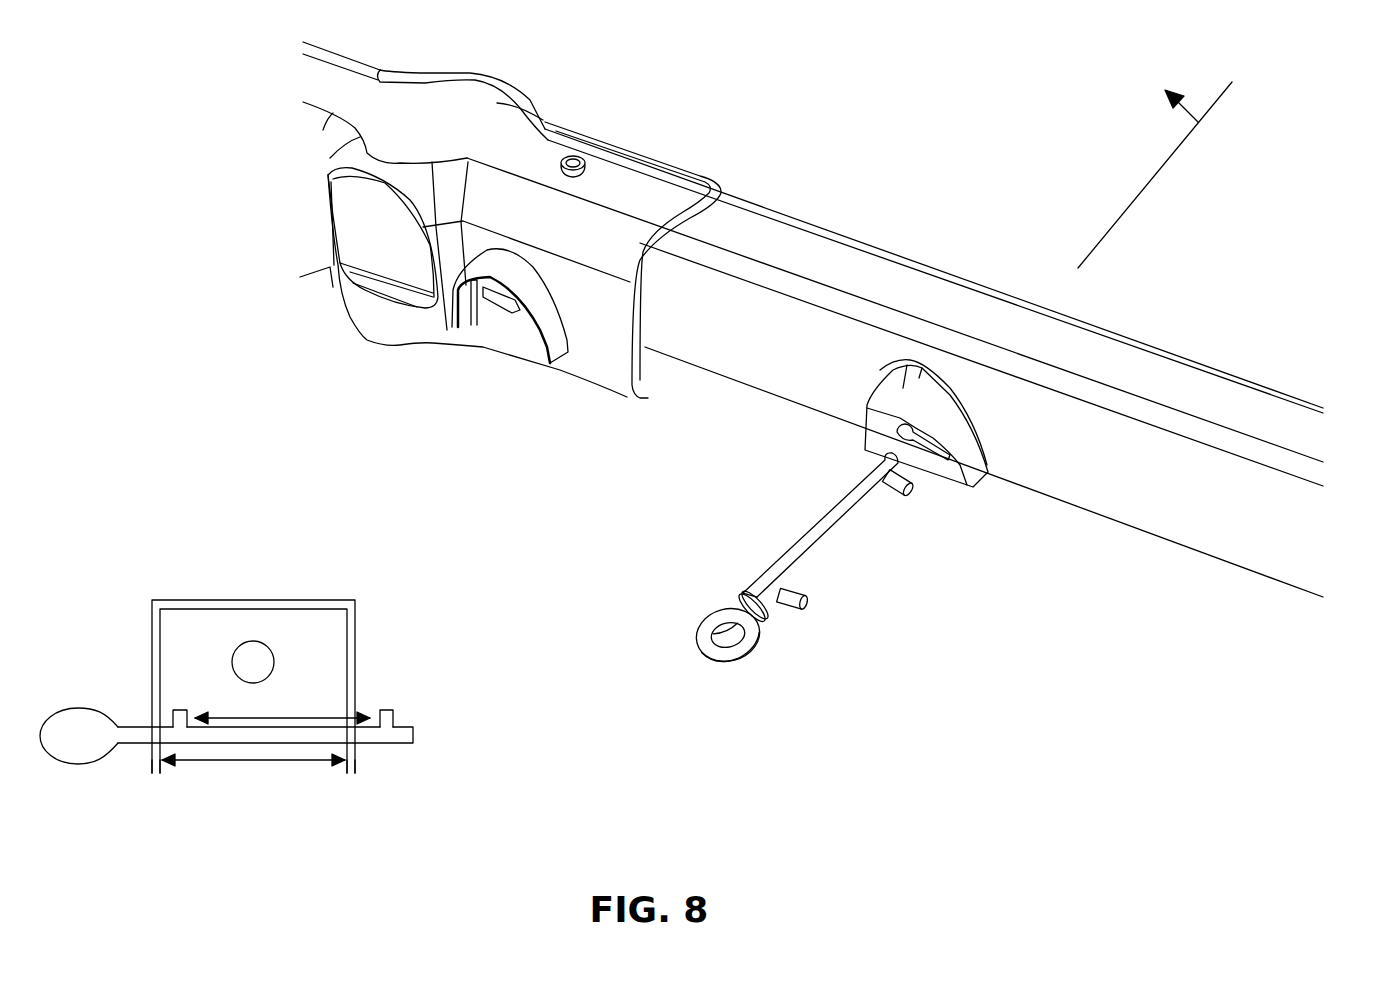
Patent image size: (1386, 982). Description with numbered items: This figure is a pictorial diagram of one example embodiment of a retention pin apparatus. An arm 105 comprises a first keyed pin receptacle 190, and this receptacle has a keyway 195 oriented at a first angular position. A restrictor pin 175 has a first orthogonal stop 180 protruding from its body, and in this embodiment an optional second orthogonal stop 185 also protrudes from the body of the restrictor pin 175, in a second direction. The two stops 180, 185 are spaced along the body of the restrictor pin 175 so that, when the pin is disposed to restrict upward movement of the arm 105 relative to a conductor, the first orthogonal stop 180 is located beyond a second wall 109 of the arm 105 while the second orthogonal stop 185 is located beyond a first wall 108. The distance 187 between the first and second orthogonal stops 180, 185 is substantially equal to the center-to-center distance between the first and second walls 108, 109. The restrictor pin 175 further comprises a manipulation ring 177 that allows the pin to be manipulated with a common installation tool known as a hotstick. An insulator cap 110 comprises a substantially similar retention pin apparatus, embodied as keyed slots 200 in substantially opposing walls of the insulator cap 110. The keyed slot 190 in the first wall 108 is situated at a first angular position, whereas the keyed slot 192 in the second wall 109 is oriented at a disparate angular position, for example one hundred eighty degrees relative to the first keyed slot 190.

The arm 105 is at (812, 234).
The first wall 108 is at (347, 775).
The second wall 109 is at (156, 775).
The insulator cap 110 is at (660, 164).
The restrictor pin 175 is at (822, 517).
The manipulation ring 177 is at (715, 618).
The first orthogonal stop 180 is at (908, 490).
The second orthogonal stop 185 is at (806, 610).
The travel distance 187 is at (318, 715).
The first keyed pin receptacle 190 is at (862, 413).
The keyed slot 192 is at (1193, 112).
The keyway 195 is at (940, 440).
The keyed slots 200 is at (504, 330).